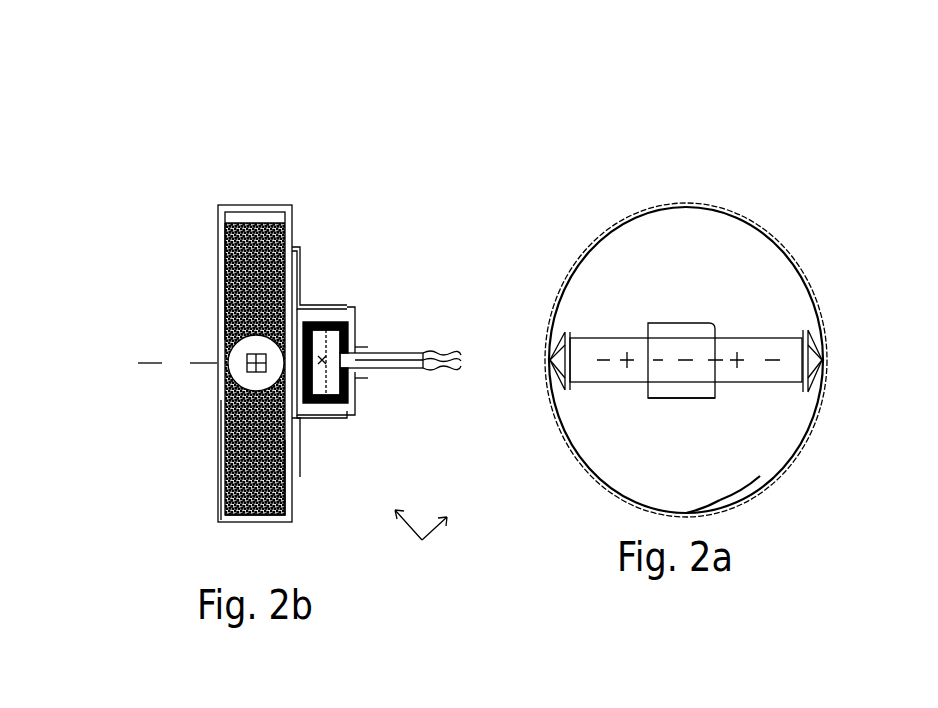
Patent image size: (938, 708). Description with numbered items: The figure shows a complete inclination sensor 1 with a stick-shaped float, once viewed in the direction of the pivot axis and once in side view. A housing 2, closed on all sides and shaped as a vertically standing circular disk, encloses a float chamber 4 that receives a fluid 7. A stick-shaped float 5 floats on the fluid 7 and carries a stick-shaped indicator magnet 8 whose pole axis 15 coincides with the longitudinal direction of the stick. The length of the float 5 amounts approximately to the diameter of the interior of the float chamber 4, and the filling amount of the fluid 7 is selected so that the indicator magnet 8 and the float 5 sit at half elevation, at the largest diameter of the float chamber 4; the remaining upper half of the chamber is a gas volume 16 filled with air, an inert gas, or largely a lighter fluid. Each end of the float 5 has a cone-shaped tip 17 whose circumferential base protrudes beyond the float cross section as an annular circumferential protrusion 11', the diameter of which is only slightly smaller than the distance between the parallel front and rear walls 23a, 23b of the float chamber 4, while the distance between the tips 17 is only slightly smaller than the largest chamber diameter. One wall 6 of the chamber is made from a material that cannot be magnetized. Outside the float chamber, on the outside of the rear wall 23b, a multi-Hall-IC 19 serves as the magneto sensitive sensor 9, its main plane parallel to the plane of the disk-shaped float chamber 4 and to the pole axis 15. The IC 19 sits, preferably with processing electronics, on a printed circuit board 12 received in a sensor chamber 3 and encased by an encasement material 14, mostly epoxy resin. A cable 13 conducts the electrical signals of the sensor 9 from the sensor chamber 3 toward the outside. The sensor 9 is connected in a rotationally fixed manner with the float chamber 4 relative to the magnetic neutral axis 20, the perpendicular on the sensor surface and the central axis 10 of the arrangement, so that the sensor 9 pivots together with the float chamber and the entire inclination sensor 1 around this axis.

In FIG. 2B, the inclination sensor 1 is at (421, 540).
In FIG. 2B, the housing 2 is at (240, 205).
In FIG. 2A, the housing 2 is at (752, 218).
In FIG. 2B, the sensor chamber 3 is at (353, 308).
In FIG. 2B, the float chamber 4 is at (265, 217).
In FIG. 2A, the float chamber 4 is at (789, 488).
In FIG. 2B, the float 5 is at (226, 265).
In FIG. 2A, the float 5 is at (748, 355).
In FIG. 2B, the wall 6 is at (298, 390).
In FIG. 2B, the fluid 7 is at (223, 437).
In FIG. 2A, the fluid 7 is at (782, 437).
In FIG. 2B, the indicator magnet 8 is at (247, 363).
In FIG. 2A, the indicator magnet 8 is at (742, 249).
In FIG. 2B, the magneto sensitive sensor 9 is at (322, 304).
In FIG. 2A, the magneto sensitive sensor 9 is at (716, 398).
In FIG. 2B, the axis 10 is at (160, 360).
In FIG. 2A, the axis 10 is at (687, 360).
In FIG. 2A, the annular circumferential protrusion 11' is at (702, 377).
In FIG. 2B, the printed circuit board 12 is at (343, 304).
In FIG. 2B, the cable 13 is at (400, 358).
In FIG. 2B, the encasement material 14 is at (304, 300).
In FIG. 2A, the pole axis 15 is at (762, 365).
In FIG. 2A, the gas volume 16 is at (687, 203).
In FIG. 2A, the tips 17 is at (548, 358).
In FIG. 2B, the multi-Hall-IC 19 is at (352, 242).
In FIG. 2A, the multi-Hall-IC 19 is at (742, 474).
In FIG. 2B, the magnetic neutral axis 20 is at (463, 364).
In FIG. 2A, the magnetic neutral axis 20 is at (640, 455).
In FIG. 2B, the front wall 23a is at (222, 472).
In FIG. 2B, the rear wall 23b is at (296, 507).